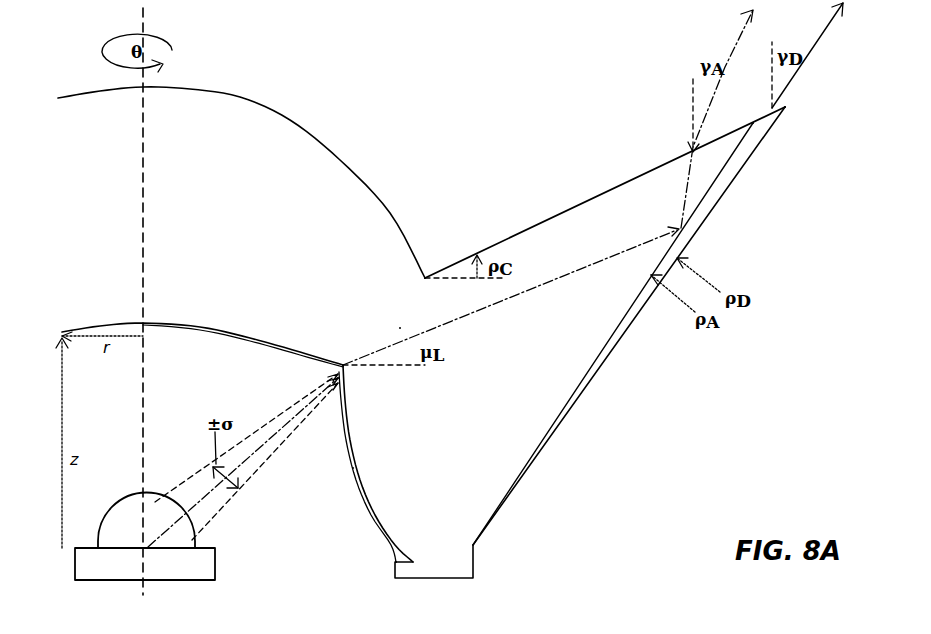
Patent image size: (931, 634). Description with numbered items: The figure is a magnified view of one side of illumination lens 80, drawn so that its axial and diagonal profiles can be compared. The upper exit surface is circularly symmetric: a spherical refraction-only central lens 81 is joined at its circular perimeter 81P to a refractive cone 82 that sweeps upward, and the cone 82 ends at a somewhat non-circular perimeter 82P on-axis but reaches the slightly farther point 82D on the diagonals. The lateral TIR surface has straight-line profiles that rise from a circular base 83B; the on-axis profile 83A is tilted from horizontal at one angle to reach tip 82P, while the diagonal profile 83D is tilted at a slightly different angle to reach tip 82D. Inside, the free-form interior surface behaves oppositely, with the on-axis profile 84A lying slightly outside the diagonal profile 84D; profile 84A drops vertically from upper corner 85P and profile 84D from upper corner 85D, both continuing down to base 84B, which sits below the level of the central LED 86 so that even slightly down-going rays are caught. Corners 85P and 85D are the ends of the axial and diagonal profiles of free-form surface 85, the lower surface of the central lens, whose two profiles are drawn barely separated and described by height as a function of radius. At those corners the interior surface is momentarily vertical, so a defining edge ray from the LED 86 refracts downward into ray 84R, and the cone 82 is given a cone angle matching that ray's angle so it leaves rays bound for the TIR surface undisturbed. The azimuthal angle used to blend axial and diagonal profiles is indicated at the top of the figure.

The illumination lens 80 is at (385, 110).
The central lens 81 is at (247, 97).
The circular perimeter of the central lens 81P is at (427, 268).
The cone 82 is at (582, 197).
The diagonal tip point of the cone 82D is at (786, 110).
The perimeter of the cone 82P is at (755, 125).
The on-axis profile of the lateral TIR surface 83A is at (608, 334).
The circular base of the lateral TIR surface 83B is at (480, 547).
The diagonal profile of the lateral TIR surface 83D is at (618, 343).
The on-axis profile of the interior surface 84A is at (372, 455).
The base of the interior surface 84B is at (395, 560).
The diagonal profile of the interior surface 84D is at (353, 468).
The refracted ray 84R is at (400, 328).
The free-form surface 85 is at (180, 322).
The diagonal upper corner 85D is at (338, 345).
The upper corner / perimeter 85P is at (333, 373).
The LED 86 is at (127, 503).